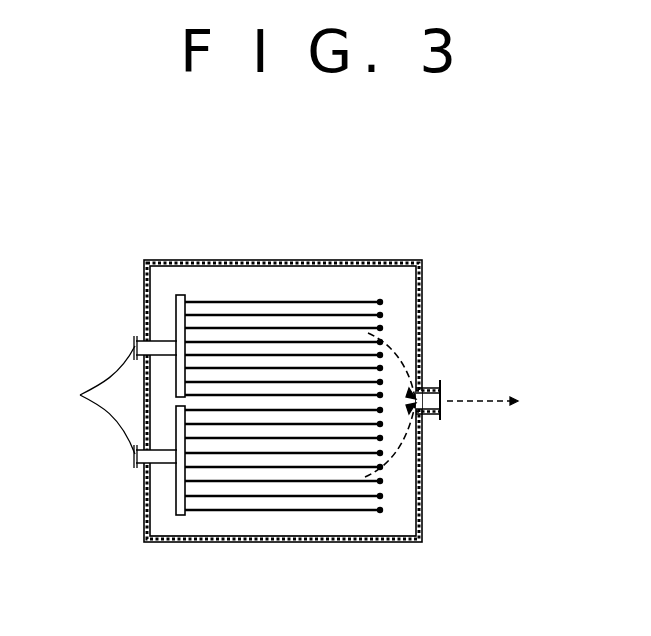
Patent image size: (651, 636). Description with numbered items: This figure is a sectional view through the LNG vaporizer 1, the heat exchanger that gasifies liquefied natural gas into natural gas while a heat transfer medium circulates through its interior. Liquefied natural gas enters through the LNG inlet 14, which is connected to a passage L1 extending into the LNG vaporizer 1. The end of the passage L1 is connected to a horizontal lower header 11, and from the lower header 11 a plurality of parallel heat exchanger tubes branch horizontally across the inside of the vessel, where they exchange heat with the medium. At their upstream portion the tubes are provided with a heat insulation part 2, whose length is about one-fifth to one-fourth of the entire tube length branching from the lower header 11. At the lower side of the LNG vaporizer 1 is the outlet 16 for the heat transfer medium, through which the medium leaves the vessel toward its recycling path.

The LNG vaporizer 1 is at (422, 308).
The heat insulation part 2 is at (265, 512).
The lower header 11 is at (176, 298).
The LNG inlet 14 is at (140, 343).
The heat transfer medium outlet 16 is at (428, 415).
The passage L1 is at (80, 396).